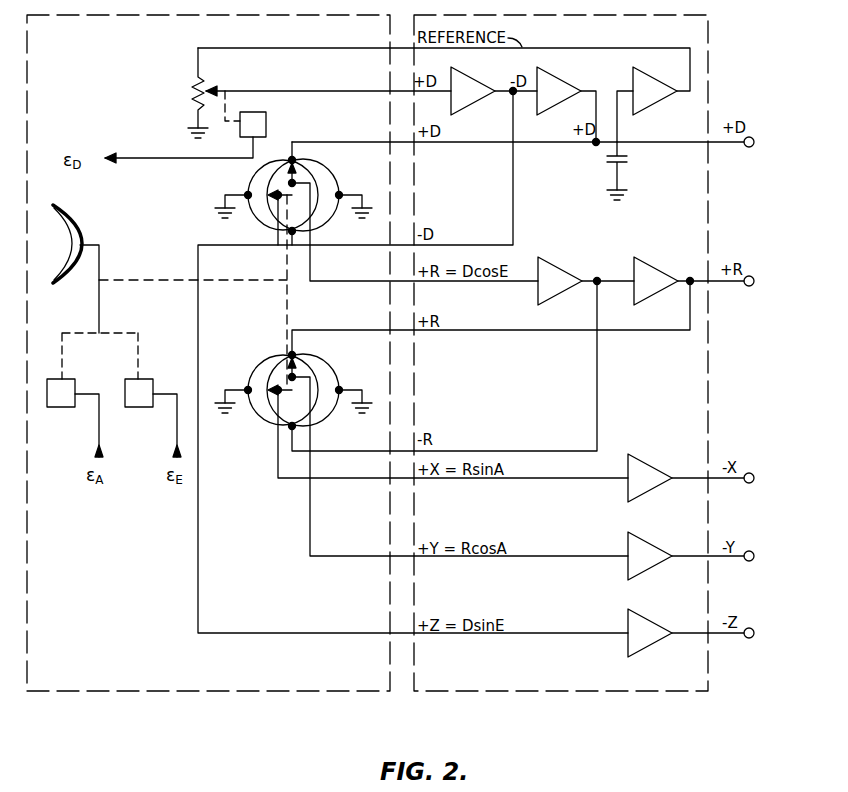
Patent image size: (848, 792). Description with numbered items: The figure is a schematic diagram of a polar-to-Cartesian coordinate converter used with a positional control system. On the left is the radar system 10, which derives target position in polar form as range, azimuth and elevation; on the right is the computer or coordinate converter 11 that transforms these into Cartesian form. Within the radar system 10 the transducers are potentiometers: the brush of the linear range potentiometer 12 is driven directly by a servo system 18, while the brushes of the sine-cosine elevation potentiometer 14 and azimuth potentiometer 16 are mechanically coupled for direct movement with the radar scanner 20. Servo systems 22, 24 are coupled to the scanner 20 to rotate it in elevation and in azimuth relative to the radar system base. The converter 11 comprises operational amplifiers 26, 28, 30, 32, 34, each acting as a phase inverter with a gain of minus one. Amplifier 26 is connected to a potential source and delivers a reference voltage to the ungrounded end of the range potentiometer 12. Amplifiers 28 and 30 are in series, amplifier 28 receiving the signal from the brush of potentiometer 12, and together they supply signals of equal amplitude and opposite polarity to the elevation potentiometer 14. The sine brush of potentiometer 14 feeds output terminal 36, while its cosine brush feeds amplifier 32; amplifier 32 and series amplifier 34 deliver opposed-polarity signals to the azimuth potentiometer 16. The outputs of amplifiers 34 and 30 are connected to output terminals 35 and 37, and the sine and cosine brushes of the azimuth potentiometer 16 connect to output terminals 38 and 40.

The radar system 10 is at (242, 683).
The polar-to-Cartesian coordinate converter 11 is at (598, 683).
The linear range potentiometer 12 is at (193, 100).
The elevation potentiometer 14 is at (258, 180).
The azimuth potentiometer 16 is at (263, 368).
The servo system 18 is at (266, 121).
The radar scanner 20 is at (78, 222).
The servo system 22 is at (70, 388).
The servo system 24 is at (148, 388).
The operational amplifier 26 is at (654, 87).
The operational amplifier 28 is at (467, 86).
The operational amplifier 30 is at (558, 86).
The operational amplifier 32 is at (560, 276).
The operational amplifier 34 is at (657, 276).
The output terminal 35 is at (754, 281).
The output terminal 36 is at (754, 633).
The output terminal 37 is at (754, 142).
The output terminal 38 is at (754, 556).
The output terminal 40 is at (754, 478).